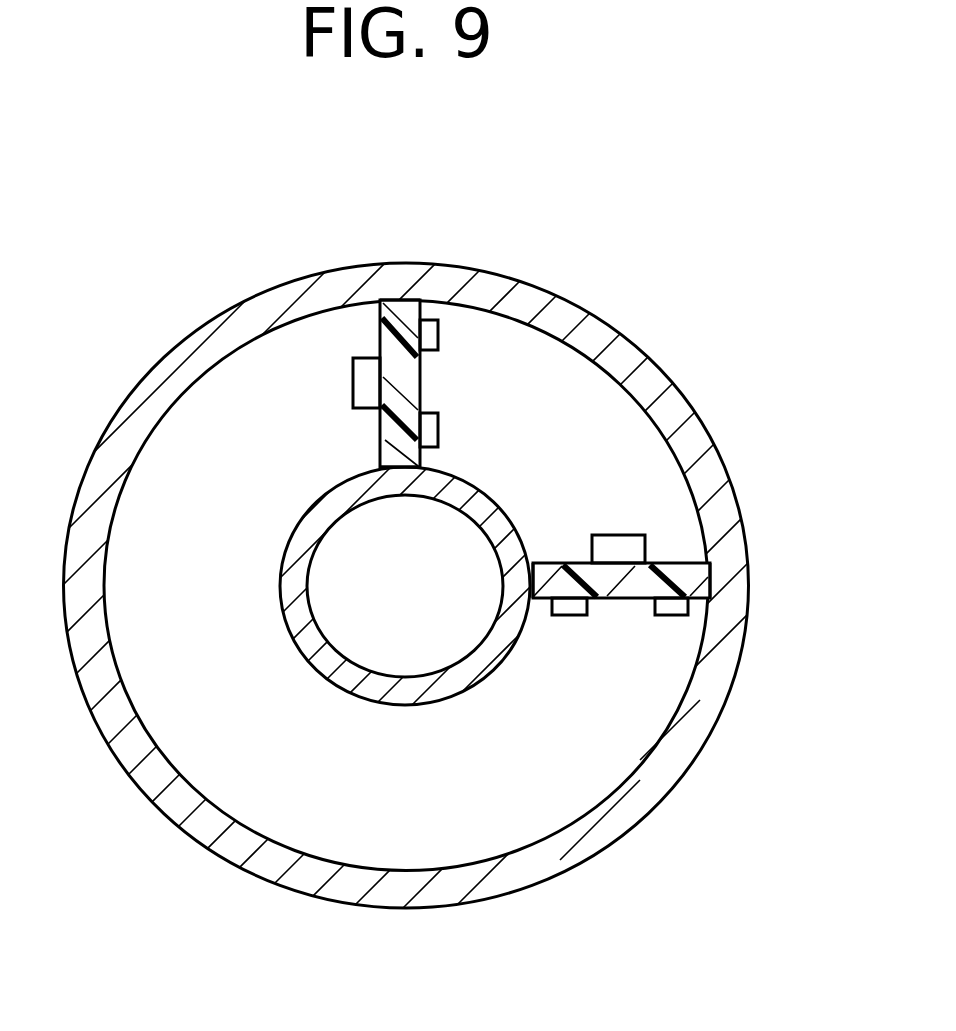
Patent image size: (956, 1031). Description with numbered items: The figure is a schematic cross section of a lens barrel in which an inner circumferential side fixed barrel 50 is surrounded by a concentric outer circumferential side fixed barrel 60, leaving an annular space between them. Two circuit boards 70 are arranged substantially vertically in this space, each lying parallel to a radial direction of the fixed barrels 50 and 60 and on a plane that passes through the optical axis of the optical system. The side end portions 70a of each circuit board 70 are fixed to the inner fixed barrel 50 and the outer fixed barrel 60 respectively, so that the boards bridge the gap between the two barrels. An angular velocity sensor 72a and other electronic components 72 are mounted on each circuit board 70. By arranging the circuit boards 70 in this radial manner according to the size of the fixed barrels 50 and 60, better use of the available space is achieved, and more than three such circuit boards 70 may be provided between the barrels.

The inner circumferential side fixed barrel 50 is at (330, 655).
The outer circumferential side fixed barrel 60 is at (622, 323).
The circuit board 70 is at (410, 392).
The side end portion 70a is at (397, 312).
The electronic component 72 is at (428, 330).
The angular velocity sensor 72a is at (365, 385).